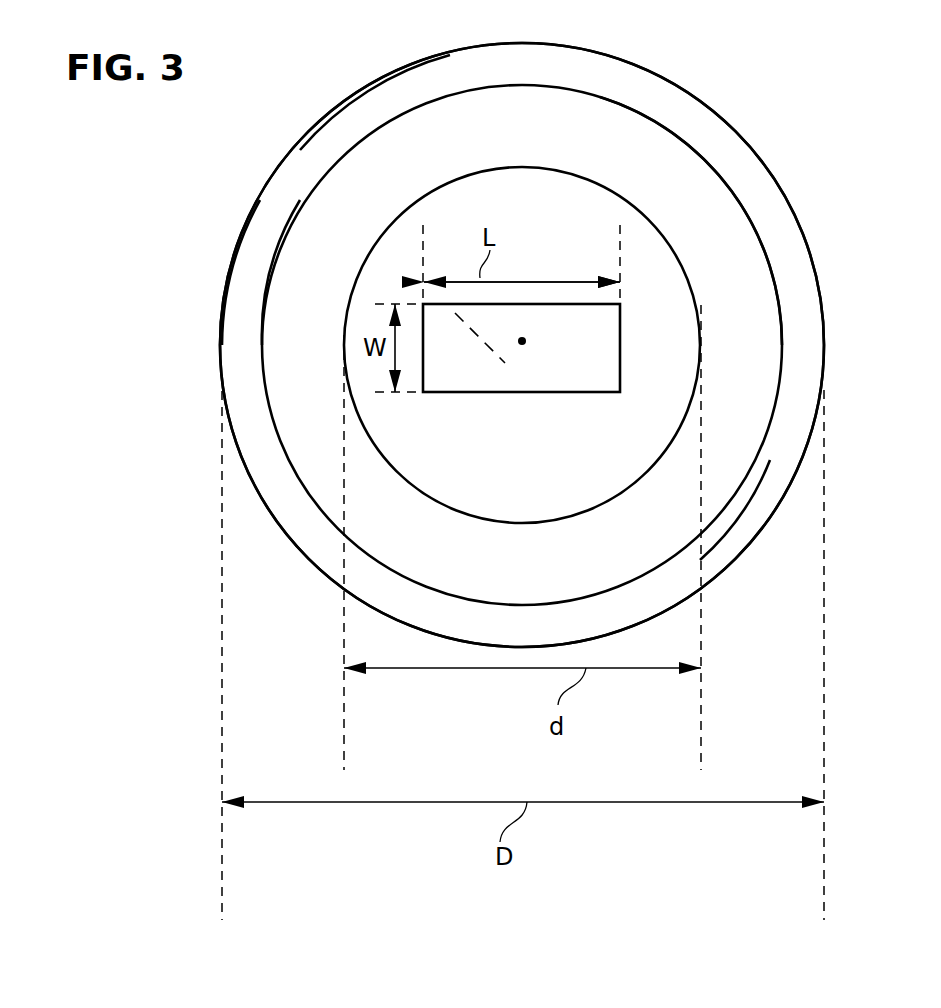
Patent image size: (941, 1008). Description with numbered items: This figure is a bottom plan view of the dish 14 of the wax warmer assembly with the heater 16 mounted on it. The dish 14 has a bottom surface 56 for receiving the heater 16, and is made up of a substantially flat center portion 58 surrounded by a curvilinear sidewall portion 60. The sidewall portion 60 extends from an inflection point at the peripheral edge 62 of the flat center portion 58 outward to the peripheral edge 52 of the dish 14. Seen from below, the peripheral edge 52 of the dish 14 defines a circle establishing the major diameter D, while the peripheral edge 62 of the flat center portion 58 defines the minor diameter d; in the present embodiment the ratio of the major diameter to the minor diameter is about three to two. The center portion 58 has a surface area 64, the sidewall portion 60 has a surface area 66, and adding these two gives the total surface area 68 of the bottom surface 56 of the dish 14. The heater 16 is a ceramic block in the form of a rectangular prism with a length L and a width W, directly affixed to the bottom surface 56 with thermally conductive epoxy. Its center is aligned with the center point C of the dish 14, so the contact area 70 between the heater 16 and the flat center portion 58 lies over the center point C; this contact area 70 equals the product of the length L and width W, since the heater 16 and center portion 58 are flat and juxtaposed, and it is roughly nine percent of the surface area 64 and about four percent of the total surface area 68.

The dish 14 is at (790, 253).
The heater 16 is at (607, 343).
The peripheral edge of the dish 52 is at (297, 147).
The bottom surface 56 is at (292, 310).
The center portion 58 is at (687, 317).
The sidewall portion 60 is at (735, 442).
The peripheral edge of the flat center portion 62 is at (650, 217).
The surface area of the center portion 64 is at (586, 205).
The surface area of the sidewall portion 66 is at (298, 386).
The total surface area 68 is at (407, 137).
The contact area 70 is at (447, 305).